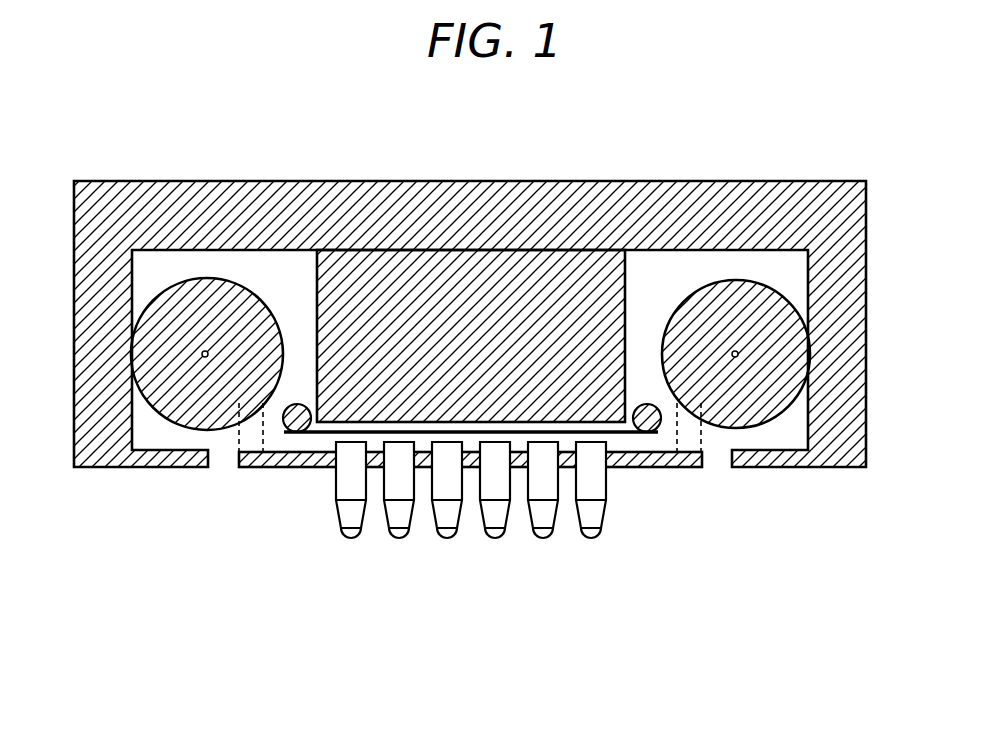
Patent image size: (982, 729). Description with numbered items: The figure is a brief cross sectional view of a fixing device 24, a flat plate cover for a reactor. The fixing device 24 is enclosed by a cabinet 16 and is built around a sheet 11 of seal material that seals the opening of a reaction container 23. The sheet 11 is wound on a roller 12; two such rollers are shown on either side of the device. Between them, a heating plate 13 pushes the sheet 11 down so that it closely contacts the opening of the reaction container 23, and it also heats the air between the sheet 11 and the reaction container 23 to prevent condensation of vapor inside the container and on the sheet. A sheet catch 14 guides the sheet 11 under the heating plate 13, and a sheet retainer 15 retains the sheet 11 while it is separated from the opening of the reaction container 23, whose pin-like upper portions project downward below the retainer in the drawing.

The fixing device 24 is at (102, 98).
The cabinet 16 is at (627, 181).
The heating plate 13 is at (467, 292).
The roller 12 is at (202, 302).
The sheet 11 is at (320, 434).
The sheet catch 14 is at (288, 428).
The sheet retainer 15 is at (646, 462).
The reaction container 23 is at (446, 540).